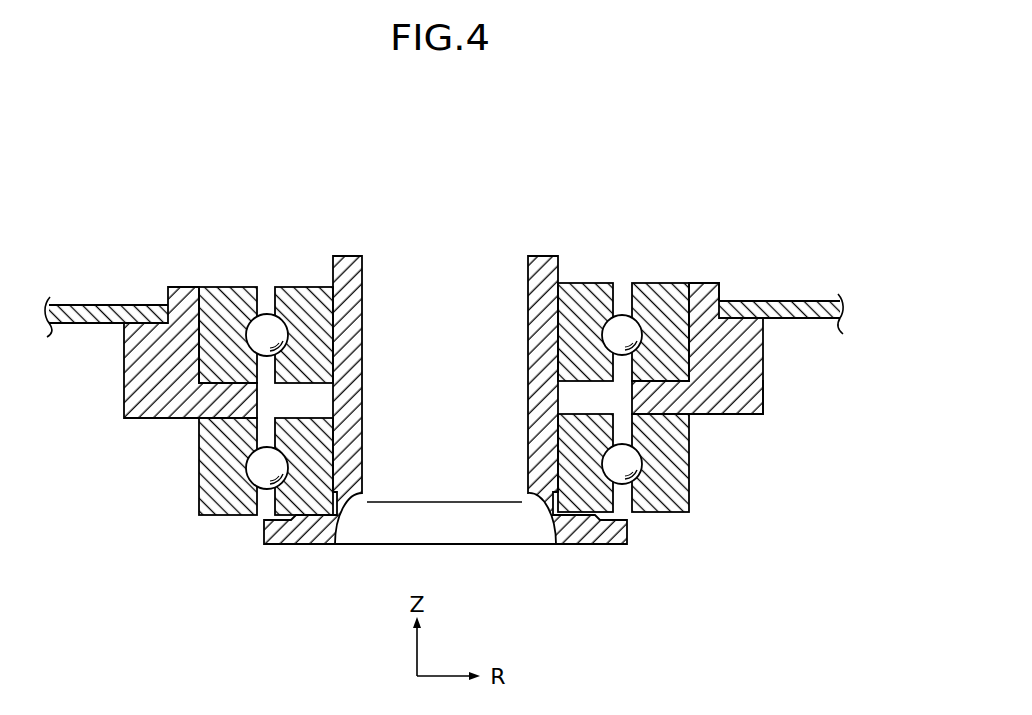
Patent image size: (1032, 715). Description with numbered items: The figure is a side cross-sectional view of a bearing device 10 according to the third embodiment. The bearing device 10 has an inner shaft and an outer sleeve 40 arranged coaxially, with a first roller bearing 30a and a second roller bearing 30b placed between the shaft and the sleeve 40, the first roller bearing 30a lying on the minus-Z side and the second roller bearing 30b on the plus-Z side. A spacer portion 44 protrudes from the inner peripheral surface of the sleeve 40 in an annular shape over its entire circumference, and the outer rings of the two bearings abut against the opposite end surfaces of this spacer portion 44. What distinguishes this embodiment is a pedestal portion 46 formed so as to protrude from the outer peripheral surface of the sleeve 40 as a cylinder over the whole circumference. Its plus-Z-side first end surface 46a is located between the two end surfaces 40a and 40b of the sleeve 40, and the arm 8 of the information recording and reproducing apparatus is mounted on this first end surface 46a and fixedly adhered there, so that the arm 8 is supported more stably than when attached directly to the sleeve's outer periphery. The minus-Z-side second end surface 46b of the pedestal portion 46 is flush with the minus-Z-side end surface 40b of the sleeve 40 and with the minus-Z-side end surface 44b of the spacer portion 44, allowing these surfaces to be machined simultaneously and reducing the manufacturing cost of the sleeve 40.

The arm 8 is at (812, 302).
The bearing device 10 is at (204, 227).
The first roller bearing 30a is at (662, 524).
The second roller bearing 30b is at (638, 272).
The outer sleeve 40 is at (158, 296).
The end surface of the sleeve 40a is at (702, 282).
The −Z-side end surface of the sleeve 40b is at (697, 417).
The spacer portion 44 is at (260, 399).
The −Z-side end surface of the spacer portion 44b is at (657, 418).
The pedestal portion 46 is at (765, 366).
The first end surface 46a is at (747, 302).
The second end surface 46b is at (760, 415).